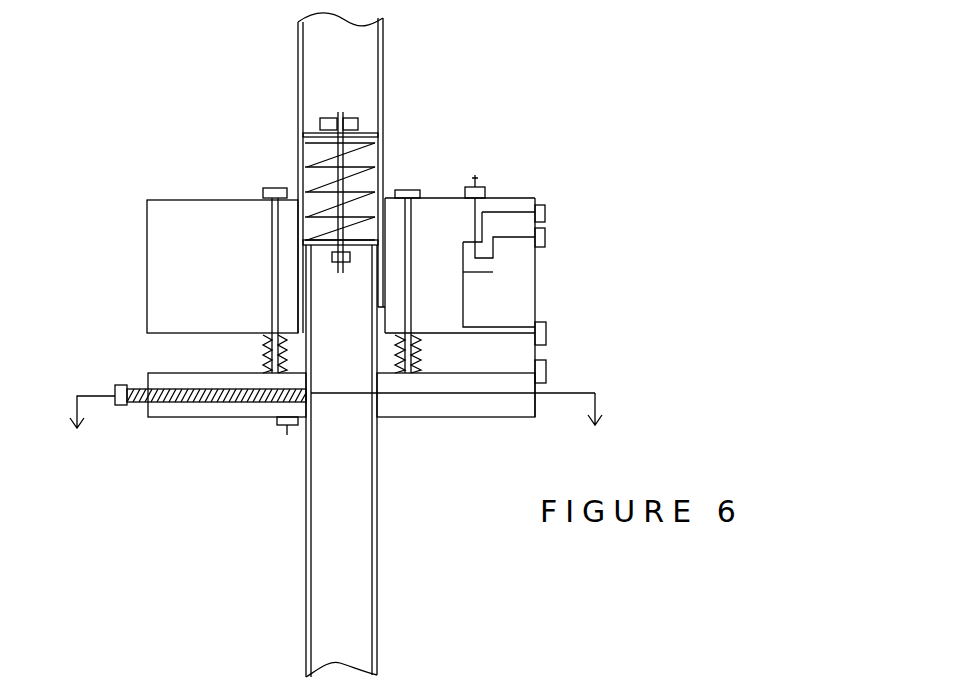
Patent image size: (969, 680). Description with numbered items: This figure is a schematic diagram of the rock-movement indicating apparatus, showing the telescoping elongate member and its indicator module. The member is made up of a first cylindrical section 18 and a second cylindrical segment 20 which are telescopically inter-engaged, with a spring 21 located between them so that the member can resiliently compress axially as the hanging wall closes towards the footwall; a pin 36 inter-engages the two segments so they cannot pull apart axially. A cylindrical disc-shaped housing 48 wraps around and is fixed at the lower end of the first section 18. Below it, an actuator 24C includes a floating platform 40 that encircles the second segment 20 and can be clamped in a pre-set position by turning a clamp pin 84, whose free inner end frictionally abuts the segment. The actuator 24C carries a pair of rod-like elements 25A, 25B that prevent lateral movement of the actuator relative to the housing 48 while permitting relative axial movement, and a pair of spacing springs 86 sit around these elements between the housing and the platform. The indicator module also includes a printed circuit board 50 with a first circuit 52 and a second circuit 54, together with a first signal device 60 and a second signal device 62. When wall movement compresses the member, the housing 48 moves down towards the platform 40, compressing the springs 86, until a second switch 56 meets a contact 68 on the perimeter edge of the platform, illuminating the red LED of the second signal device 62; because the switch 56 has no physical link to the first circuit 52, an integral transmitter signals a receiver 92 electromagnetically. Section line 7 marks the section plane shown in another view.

The first cylindrical section 18 is at (383, 58).
The height adjustment pin 36 is at (366, 135).
The spring 21 is at (307, 192).
The second cylindrical segment 20 is at (383, 592).
The housing 48 is at (150, 284).
The rod-like element 25A is at (270, 297).
The spacing springs 86 is at (397, 353).
The rod-like element 25B is at (415, 186).
The receiver 92 is at (485, 192).
The second circuit 54 is at (510, 210).
The second signal device 62 is at (545, 213).
The first signal device 60 is at (547, 240).
The first circuit 52 is at (492, 270).
The printed circuit board 50 is at (463, 244).
The second switch 56 is at (548, 322).
The contact 68 is at (548, 368).
The actuator 24C is at (226, 448).
The floating platform 40 is at (490, 405).
The clamp pin 84 is at (138, 405).
The section line 7 is at (332, 431).